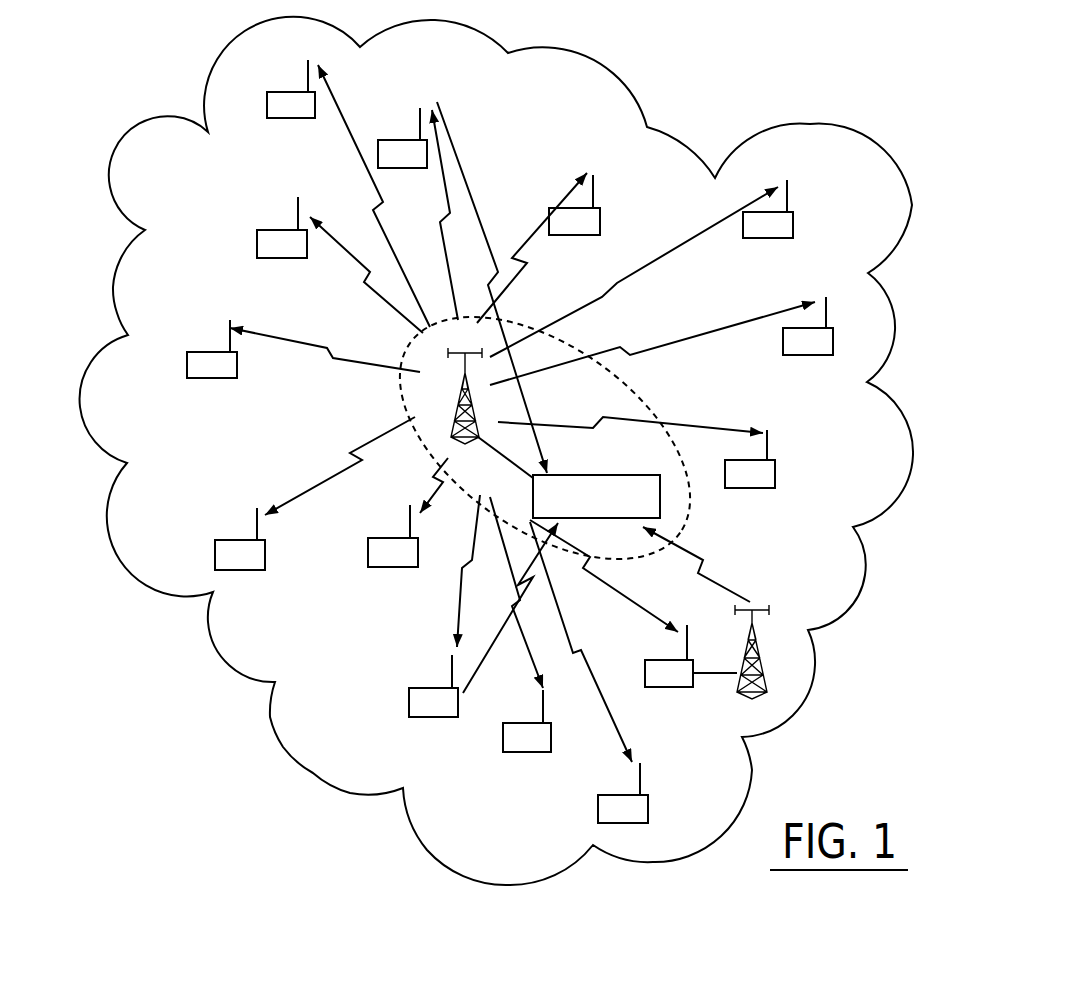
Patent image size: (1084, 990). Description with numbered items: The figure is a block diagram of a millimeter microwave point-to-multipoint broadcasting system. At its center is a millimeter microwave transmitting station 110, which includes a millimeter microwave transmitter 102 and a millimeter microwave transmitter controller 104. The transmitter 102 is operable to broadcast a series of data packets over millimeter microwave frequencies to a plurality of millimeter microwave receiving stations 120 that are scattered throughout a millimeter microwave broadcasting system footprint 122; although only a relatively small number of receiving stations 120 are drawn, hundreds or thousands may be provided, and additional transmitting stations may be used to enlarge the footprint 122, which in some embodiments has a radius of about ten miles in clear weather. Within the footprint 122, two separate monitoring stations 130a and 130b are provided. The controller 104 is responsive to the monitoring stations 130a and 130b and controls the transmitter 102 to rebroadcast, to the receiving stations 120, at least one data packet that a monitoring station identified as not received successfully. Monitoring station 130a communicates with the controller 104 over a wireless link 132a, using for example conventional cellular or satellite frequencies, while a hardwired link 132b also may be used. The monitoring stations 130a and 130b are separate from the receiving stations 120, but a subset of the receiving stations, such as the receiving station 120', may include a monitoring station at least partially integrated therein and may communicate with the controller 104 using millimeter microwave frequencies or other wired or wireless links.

The millimeter microwave transmitter 102 is at (452, 420).
The millimeter microwave transmitter controller 104 is at (603, 476).
The millimeter microwave transmitting station 110 is at (402, 386).
The millimeter microwave receiving station 120 is at (517, 434).
The receiving station 120' is at (388, 133).
The millimeter microwave broadcasting system footprint 122 is at (680, 133).
The monitoring station 130a is at (655, 660).
The monitoring station 130b is at (435, 688).
The wireless link 132a is at (730, 583).
The hardwired link 132b is at (492, 652).